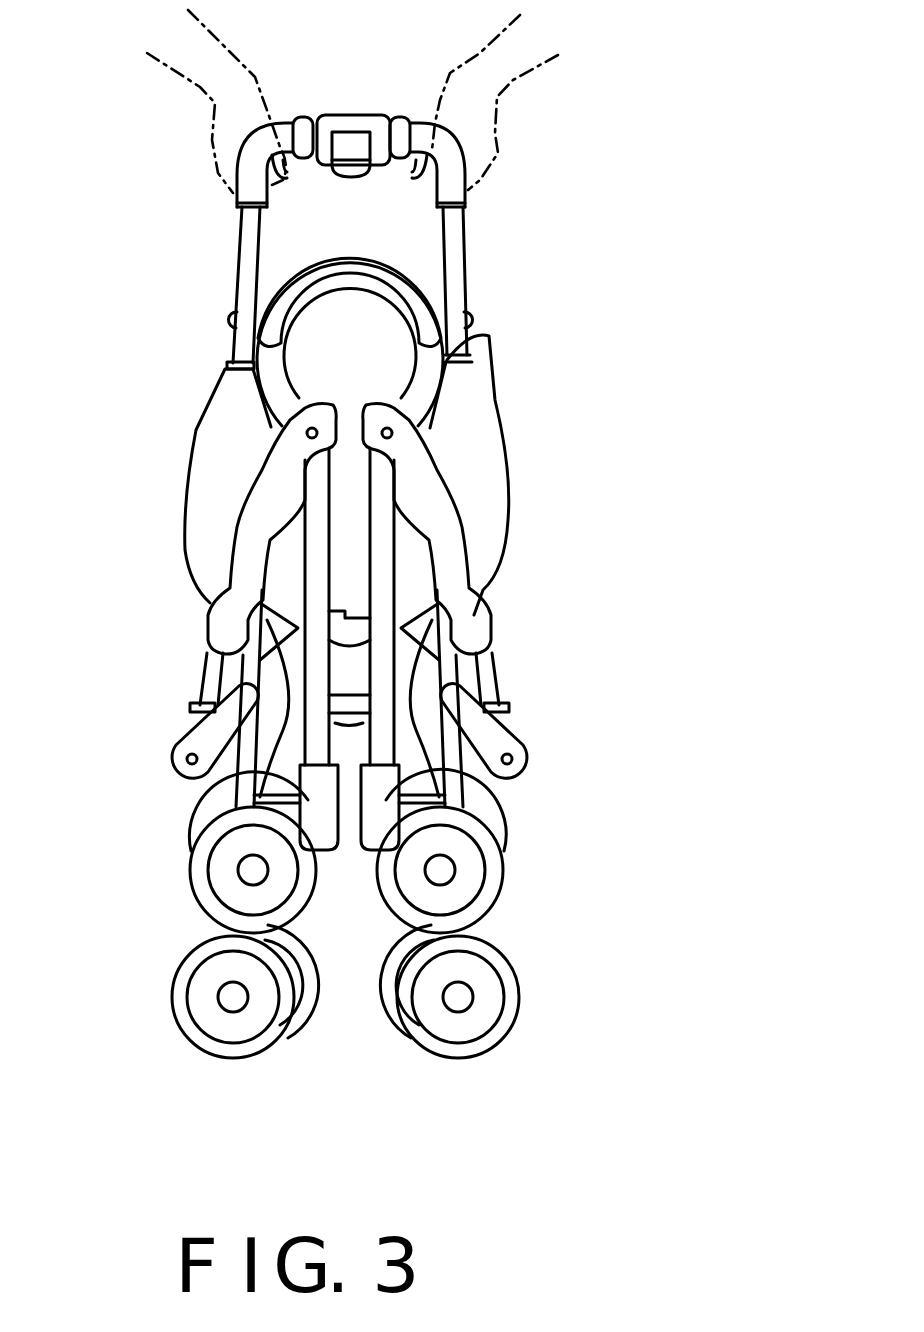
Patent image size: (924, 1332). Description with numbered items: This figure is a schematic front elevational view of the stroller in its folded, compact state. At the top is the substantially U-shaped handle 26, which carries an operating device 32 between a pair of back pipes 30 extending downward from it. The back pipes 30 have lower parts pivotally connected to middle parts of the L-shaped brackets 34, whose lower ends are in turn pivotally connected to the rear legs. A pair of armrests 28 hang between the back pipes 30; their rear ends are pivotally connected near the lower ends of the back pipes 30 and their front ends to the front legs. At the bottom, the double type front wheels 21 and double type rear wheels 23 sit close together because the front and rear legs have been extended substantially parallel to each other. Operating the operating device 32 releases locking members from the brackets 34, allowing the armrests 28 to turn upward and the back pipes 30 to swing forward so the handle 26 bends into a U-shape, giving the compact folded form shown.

The front wheels 21 is at (198, 868).
The rear wheels 23 is at (172, 1000).
The handle 26 is at (456, 179).
The armrests 28 is at (217, 633).
The back pipes 30 is at (247, 253).
The operating device 32 is at (347, 127).
The L-shaped brackets 34 is at (178, 753).